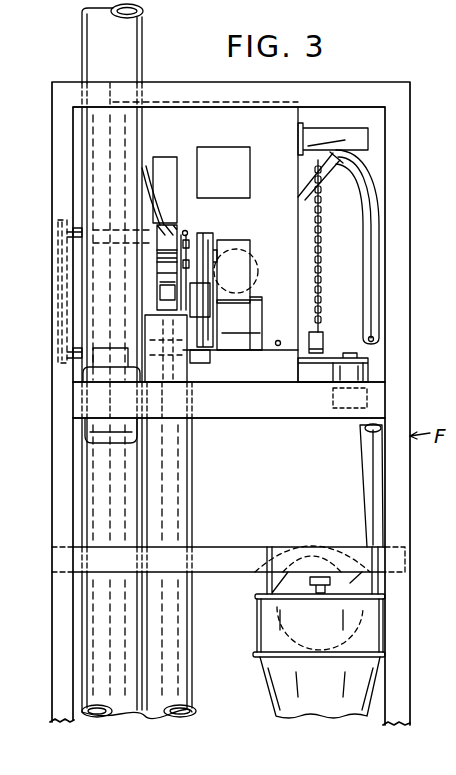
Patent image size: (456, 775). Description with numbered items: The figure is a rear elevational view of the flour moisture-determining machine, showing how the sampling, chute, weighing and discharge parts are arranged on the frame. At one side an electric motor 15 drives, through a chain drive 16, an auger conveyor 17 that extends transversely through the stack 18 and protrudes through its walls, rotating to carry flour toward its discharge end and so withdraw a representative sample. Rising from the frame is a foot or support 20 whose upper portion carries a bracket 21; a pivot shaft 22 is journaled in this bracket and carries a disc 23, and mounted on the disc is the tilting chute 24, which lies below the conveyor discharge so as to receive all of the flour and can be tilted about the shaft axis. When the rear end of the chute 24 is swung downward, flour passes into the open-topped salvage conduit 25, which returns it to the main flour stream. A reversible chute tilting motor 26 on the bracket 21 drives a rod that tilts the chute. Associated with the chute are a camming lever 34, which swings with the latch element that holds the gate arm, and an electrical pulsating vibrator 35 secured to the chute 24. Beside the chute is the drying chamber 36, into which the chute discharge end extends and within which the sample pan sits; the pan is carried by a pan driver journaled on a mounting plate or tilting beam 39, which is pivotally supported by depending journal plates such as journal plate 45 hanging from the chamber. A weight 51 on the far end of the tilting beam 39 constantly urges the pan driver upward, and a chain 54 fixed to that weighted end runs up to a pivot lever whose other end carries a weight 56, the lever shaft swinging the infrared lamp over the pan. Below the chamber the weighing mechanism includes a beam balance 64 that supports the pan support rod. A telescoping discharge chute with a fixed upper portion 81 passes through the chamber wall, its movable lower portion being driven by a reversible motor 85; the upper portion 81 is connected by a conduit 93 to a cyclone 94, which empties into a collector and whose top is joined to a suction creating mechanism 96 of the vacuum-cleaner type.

The electric motor 15 is at (93, 423).
The chain drive 16 is at (60, 291).
The auger conveyor 17 is at (155, 233).
The stack 18 is at (100, 42).
The foot or support 20 is at (192, 467).
The bracket 21 is at (213, 243).
The pivot shaft 22 is at (153, 265).
The disc 23 is at (186, 230).
The tilting chute 24 is at (165, 250).
The salvage conduit 25 is at (157, 332).
The chute tilting motor 26 is at (248, 323).
The camming lever 34 is at (200, 235).
The electrical pulsating vibrator 35 is at (162, 285).
The drying chamber 36 is at (213, 118).
The mounting plate or tilting beam 39 is at (331, 357).
The journal plate 45 is at (237, 368).
The weight 51 is at (362, 373).
The chain 54 is at (319, 258).
The weight 56 is at (358, 127).
The beam balance 64 is at (113, 490).
The fixed upper portion 81 is at (306, 165).
The reversible motor 85 is at (258, 268).
The conduit 93 is at (371, 284).
The cyclone 94 is at (270, 634).
The suction creating mechanism 96 is at (290, 585).